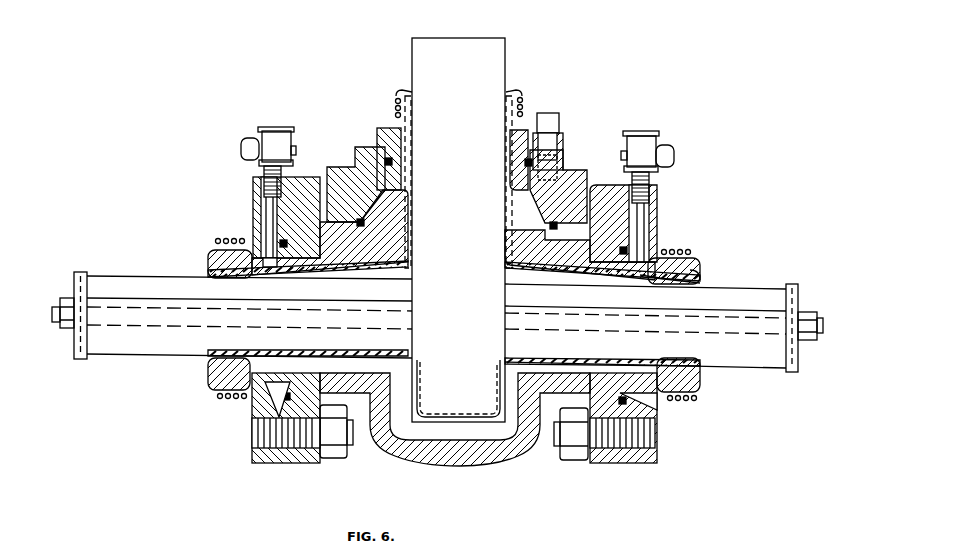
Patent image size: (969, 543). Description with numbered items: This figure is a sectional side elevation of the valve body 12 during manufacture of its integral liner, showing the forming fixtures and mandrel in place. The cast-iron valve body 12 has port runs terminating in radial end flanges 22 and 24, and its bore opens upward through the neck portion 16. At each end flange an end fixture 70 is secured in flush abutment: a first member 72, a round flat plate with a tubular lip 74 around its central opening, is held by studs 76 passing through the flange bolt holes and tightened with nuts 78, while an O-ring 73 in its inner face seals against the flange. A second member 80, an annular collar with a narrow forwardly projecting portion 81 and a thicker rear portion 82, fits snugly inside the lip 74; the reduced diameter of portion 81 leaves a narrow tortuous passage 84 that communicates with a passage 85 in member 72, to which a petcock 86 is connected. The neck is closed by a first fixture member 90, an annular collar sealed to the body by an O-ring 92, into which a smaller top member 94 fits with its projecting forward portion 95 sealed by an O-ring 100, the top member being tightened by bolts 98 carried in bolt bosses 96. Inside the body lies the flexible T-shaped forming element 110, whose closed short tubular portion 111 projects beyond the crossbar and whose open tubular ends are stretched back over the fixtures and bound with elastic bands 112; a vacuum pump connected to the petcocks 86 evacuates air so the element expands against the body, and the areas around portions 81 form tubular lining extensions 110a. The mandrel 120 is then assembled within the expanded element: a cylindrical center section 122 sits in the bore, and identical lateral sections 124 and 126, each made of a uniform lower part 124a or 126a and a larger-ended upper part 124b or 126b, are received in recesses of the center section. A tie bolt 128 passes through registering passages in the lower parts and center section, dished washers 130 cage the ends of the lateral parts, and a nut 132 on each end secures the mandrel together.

The valve body 12 is at (386, 460).
The neck portion 16 is at (380, 254).
The end flange 22 is at (606, 185).
The end flange 24 is at (297, 185).
The end fixture 70 is at (262, 226).
The first member 72 is at (250, 198).
The O-ring 73 is at (285, 397).
The lip 74 is at (680, 256).
The studs 76 is at (270, 432).
The nuts 78 is at (574, 440).
The second member 80 is at (692, 264).
The forwardly projecting portion 81 is at (648, 283).
The rear portion 82 is at (698, 272).
The tortuous passage 84 is at (612, 282).
The passage 85 is at (641, 228).
The petcock 86 is at (270, 130).
The first fixture member 90 is at (333, 165).
The O-ring 92 is at (550, 225).
The top member 94 is at (520, 130).
The projecting forward portion 95 is at (393, 195).
The bolt bosses 96 is at (562, 136).
The bolts 98 is at (550, 115).
The O-ring 100 is at (392, 161).
The forming element 110 is at (500, 138).
The tubular lining extensions 110a is at (670, 284).
The short tubular portion 111 is at (443, 416).
The elastic bands 112 is at (396, 96).
The mandrel 120 is at (441, 56).
The center section 122 is at (468, 193).
The lateral section 124 is at (732, 298).
The lower part 124a is at (683, 358).
The upper part 124b is at (578, 306).
The lateral section 126 is at (170, 290).
The lower part 126a is at (304, 351).
The upper part 126b is at (340, 299).
The tie bolt 128 is at (50, 322).
The dished washers 130 is at (82, 272).
The nut 132 is at (63, 300).